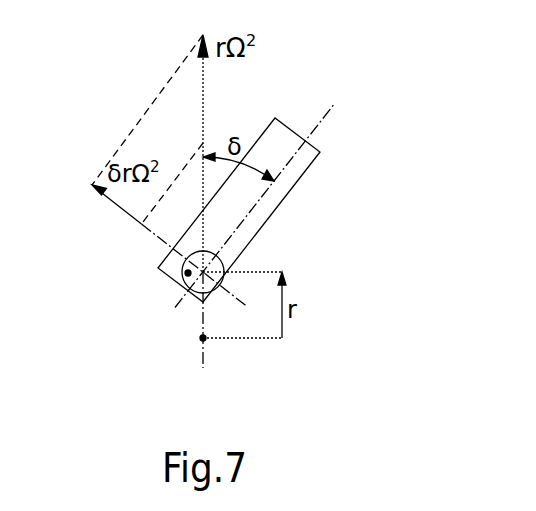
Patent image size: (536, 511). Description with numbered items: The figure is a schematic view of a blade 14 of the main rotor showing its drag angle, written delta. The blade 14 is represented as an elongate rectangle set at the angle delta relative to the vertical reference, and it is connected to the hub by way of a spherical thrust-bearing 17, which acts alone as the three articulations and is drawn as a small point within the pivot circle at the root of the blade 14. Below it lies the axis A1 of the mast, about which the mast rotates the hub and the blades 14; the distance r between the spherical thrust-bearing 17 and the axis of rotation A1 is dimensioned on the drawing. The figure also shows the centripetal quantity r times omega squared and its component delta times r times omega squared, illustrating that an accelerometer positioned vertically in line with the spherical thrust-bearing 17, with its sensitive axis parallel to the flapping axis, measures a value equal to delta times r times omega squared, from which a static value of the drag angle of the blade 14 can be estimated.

The blade 14 is at (277, 202).
The spherical thrust-bearing 17 is at (188, 275).
The axis of the mast A1 is at (205, 341).